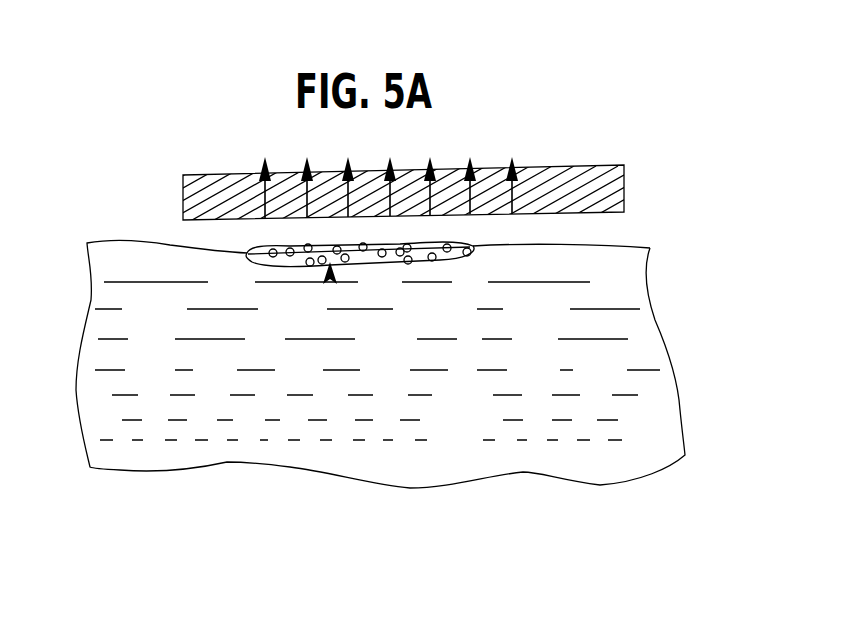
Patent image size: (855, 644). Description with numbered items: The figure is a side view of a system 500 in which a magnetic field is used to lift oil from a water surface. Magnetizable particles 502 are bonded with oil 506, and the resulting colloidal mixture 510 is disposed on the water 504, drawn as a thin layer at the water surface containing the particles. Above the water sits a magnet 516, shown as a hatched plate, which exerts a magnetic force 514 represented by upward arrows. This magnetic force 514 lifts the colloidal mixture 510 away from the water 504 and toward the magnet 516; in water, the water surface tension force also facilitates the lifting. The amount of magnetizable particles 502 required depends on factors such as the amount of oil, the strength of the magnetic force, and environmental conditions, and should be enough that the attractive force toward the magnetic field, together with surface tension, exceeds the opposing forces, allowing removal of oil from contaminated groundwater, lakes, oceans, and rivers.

The system 500 is at (138, 123).
The magnetizable particles 502 is at (450, 241).
The water 504 is at (608, 373).
The oil 506 is at (368, 265).
The colloidal mixture 510 is at (330, 283).
The magnetic force 514 is at (260, 172).
The magnet 516 is at (538, 168).